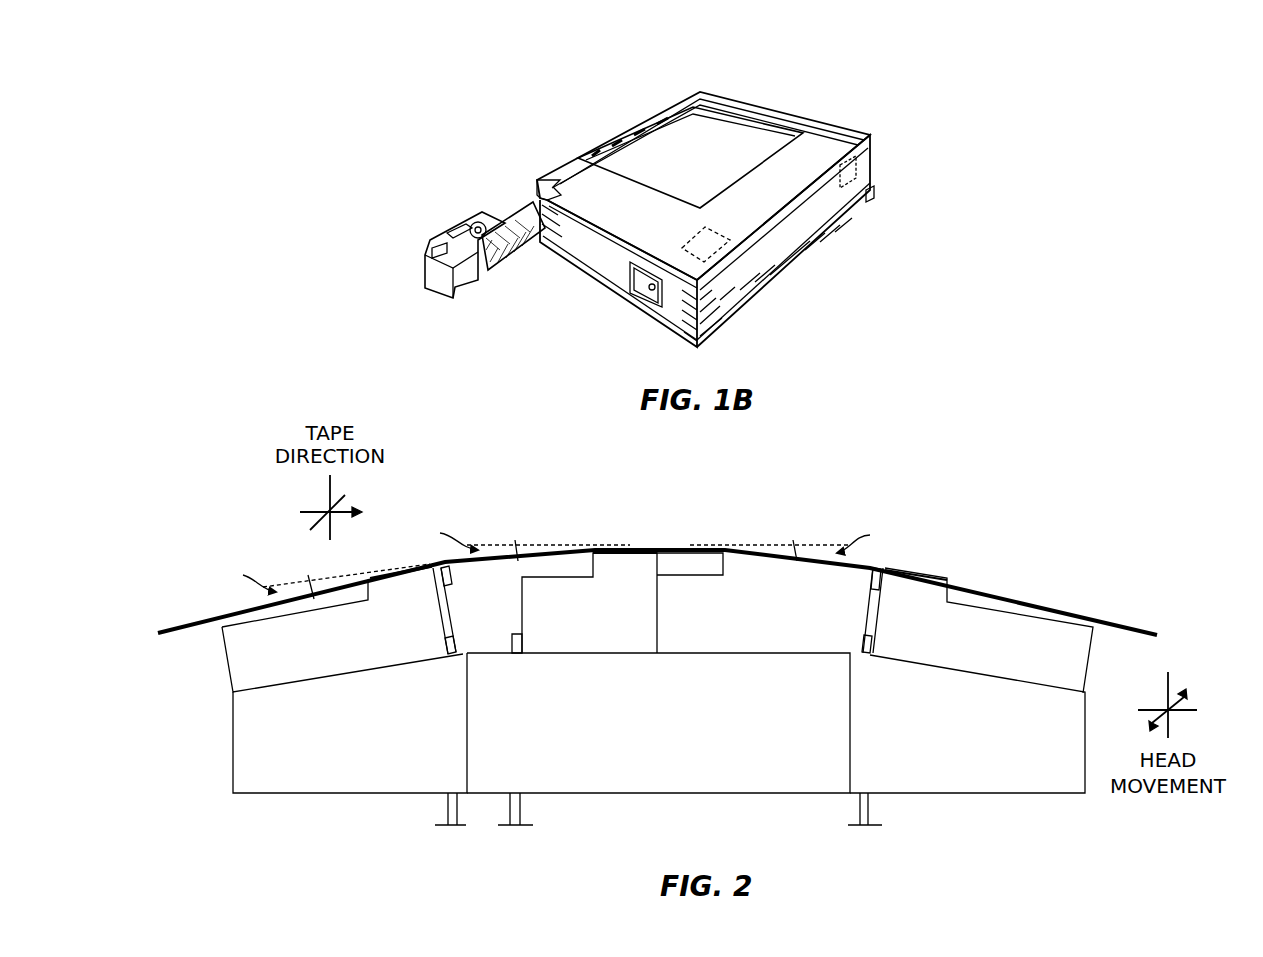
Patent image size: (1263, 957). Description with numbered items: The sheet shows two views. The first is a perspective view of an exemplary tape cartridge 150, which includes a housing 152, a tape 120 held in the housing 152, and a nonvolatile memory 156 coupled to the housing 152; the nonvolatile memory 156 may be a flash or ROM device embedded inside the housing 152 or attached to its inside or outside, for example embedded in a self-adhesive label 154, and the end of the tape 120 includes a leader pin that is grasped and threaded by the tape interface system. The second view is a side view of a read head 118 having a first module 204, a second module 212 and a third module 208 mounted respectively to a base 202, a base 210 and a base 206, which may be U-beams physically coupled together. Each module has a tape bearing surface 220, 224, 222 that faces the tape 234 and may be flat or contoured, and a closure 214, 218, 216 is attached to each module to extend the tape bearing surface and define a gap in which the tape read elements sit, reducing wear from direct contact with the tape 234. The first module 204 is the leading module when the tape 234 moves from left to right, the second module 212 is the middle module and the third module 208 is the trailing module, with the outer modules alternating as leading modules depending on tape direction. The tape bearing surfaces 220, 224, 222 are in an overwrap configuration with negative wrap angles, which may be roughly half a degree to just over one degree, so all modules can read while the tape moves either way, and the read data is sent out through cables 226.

In FIG. 2, the read head 118 is at (657, 652).
In FIG. 1B, the tape 120 is at (505, 262).
In FIG. 1B, the tape cartridge 150 is at (843, 105).
In FIG. 1B, the housing 152 is at (595, 140).
In FIG. 1B, the self-adhesive label 154 is at (858, 163).
In FIG. 1B, the nonvolatile memory 156 is at (707, 233).
In FIG. 2, the base 202 is at (350, 723).
In FIG. 2, the first module 204 is at (342, 629).
In FIG. 2, the base 206 is at (967, 724).
In FIG. 2, the third module 208 is at (989, 630).
In FIG. 2, the base 210 is at (658, 723).
In FIG. 2, the second module 212 is at (584, 603).
In FIG. 2, the closure 214 is at (452, 578).
In FIG. 2, the closure 216 is at (868, 575).
In FIG. 2, the closure 218 is at (698, 577).
In FIG. 2, the tape bearing surface 220 is at (411, 577).
In FIG. 2, the tape bearing surface 222 is at (907, 572).
In FIG. 2, the tape bearing surface 224 is at (628, 558).
In FIG. 2, the cables 226 is at (437, 812).
In FIG. 2, the tape 234 is at (1040, 593).